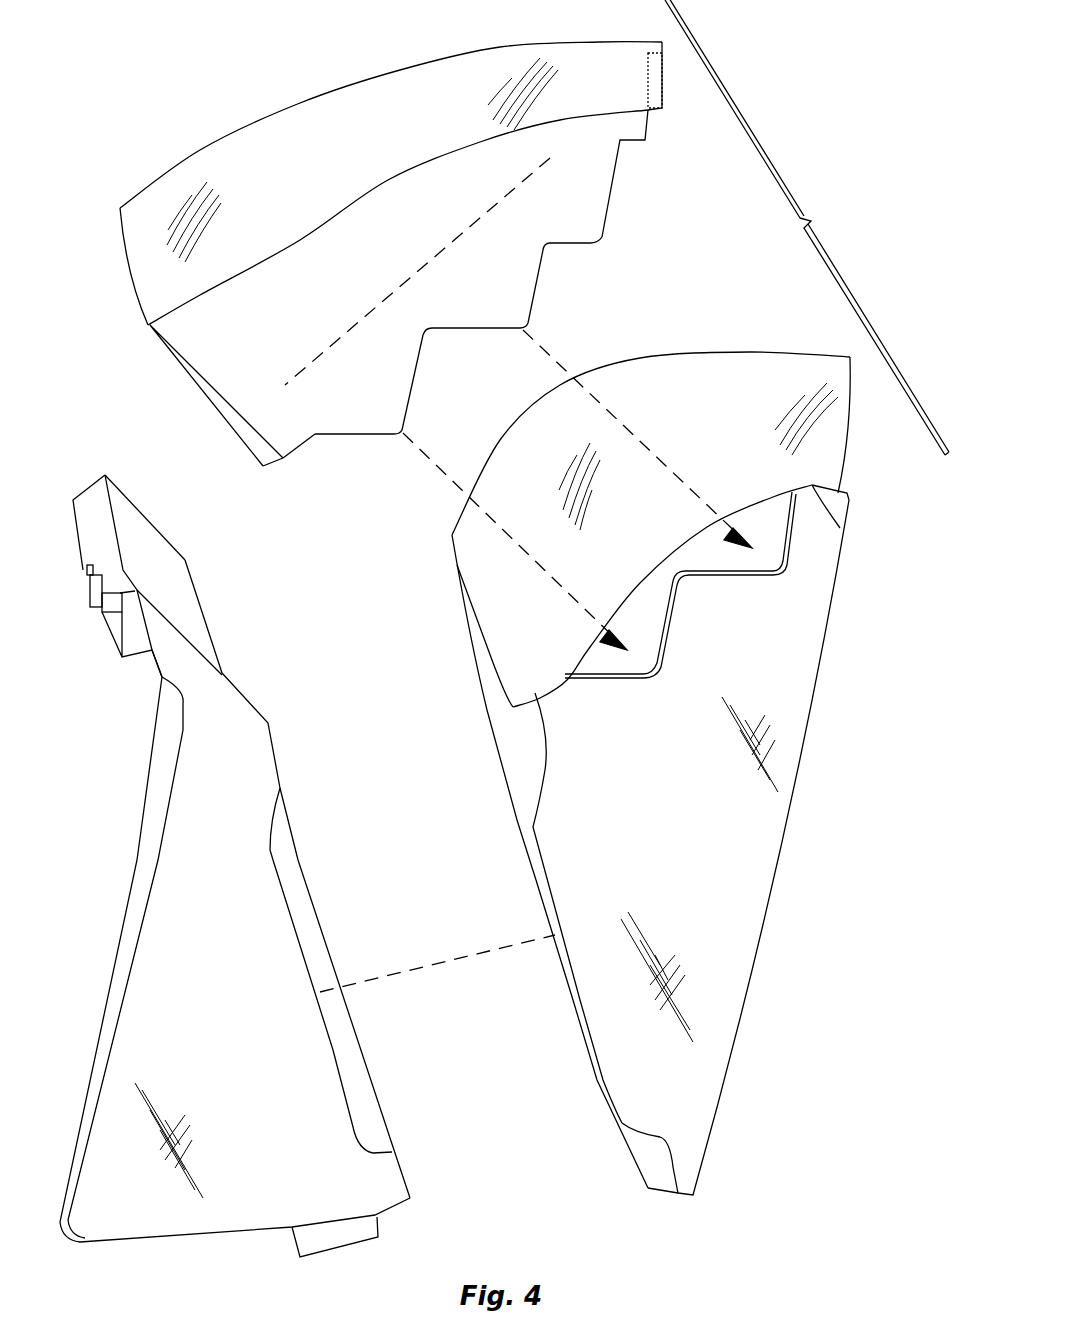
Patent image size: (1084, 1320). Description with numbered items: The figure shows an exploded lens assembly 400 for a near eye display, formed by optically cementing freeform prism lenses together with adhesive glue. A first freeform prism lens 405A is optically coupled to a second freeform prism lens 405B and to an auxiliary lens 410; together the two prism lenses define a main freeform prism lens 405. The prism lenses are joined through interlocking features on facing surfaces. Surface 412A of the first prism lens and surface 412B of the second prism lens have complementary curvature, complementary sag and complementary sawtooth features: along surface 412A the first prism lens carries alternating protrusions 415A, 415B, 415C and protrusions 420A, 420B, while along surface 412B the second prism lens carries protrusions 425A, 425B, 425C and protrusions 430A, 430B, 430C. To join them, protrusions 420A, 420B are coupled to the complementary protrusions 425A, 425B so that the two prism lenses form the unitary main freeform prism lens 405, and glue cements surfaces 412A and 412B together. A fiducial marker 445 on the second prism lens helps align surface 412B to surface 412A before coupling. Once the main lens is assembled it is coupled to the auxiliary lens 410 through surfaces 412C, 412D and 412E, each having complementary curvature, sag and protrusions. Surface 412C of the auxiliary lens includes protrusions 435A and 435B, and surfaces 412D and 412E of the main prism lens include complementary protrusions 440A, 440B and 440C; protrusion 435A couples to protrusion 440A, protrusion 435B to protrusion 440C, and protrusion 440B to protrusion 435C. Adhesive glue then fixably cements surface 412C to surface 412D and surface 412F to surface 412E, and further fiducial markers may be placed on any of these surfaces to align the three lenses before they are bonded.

The assembly 400 is at (168, 48).
The main freeform prism lens 405 is at (806, 224).
The first freeform prism lens 405A is at (640, 887).
The second freeform prism lens 405B is at (250, 322).
The auxiliary lens 410 is at (188, 1021).
The surface 412A is at (677, 429).
The surface 412B is at (634, 143).
The surface 412C is at (392, 1120).
The surface 412D is at (600, 1088).
The surface 412E is at (216, 400).
The surface 412F is at (122, 505).
The protrusion 415A is at (552, 690).
The protrusion 415B is at (680, 580).
The protrusion 415C is at (840, 528).
The protrusion 420A is at (658, 680).
The protrusion 420B is at (778, 578).
The protrusion 425A is at (396, 438).
The protrusion 425B is at (533, 324).
The protrusion 425C is at (605, 241).
The protrusion 430A is at (316, 440).
The protrusion 430B is at (428, 345).
The protrusion 430C is at (544, 263).
The protrusion 435A is at (334, 1050).
The protrusion 435B is at (280, 740).
The protrusion 435C is at (192, 598).
The protrusion 440A is at (563, 982).
The protrusion 440B is at (256, 460).
The protrusion 440C is at (512, 765).
The fiducial marker 445 is at (395, 290).